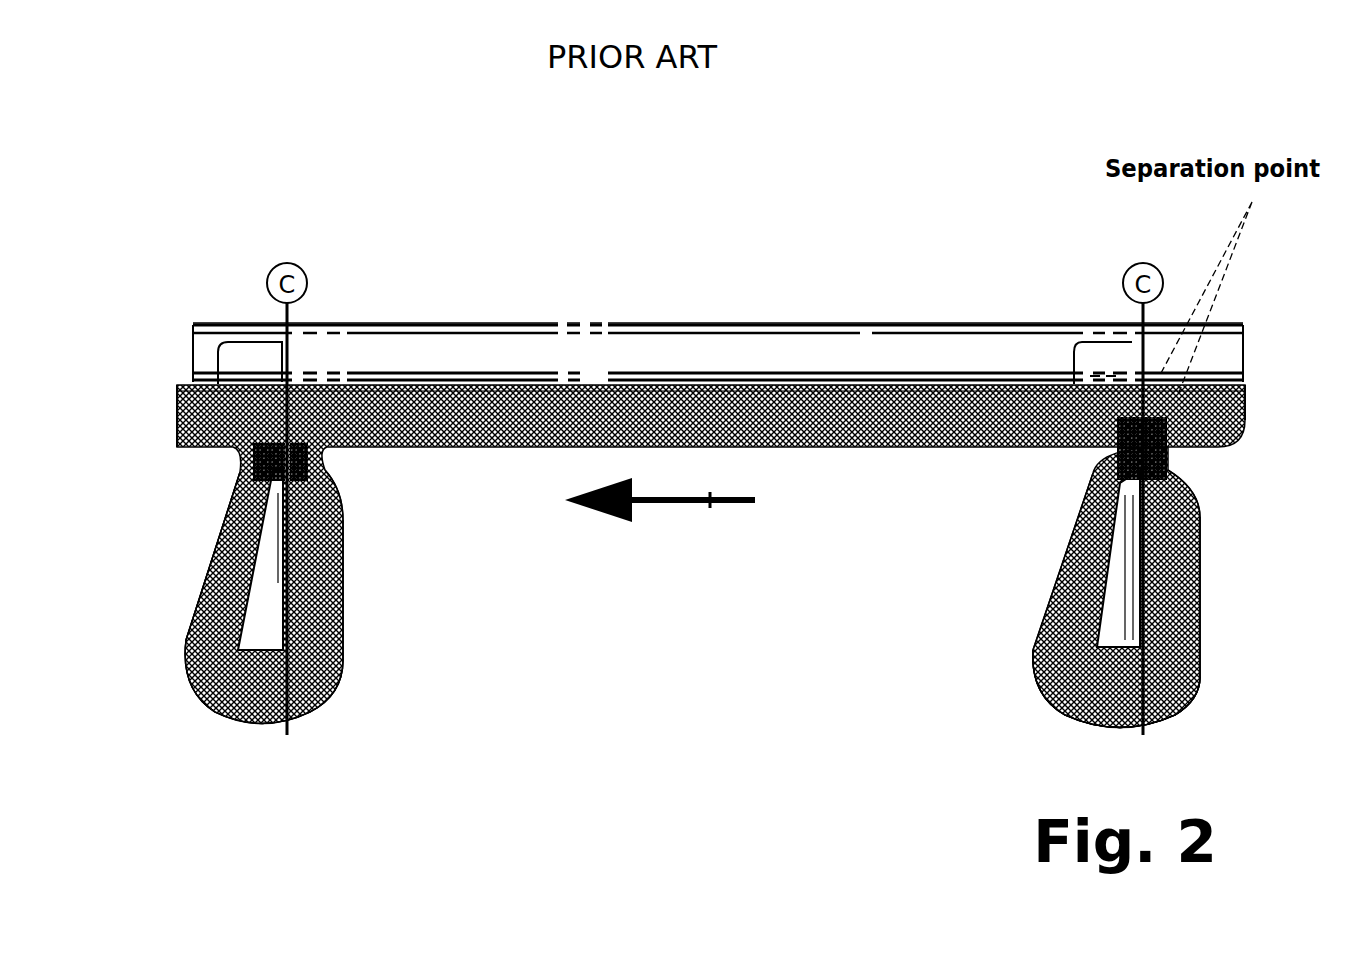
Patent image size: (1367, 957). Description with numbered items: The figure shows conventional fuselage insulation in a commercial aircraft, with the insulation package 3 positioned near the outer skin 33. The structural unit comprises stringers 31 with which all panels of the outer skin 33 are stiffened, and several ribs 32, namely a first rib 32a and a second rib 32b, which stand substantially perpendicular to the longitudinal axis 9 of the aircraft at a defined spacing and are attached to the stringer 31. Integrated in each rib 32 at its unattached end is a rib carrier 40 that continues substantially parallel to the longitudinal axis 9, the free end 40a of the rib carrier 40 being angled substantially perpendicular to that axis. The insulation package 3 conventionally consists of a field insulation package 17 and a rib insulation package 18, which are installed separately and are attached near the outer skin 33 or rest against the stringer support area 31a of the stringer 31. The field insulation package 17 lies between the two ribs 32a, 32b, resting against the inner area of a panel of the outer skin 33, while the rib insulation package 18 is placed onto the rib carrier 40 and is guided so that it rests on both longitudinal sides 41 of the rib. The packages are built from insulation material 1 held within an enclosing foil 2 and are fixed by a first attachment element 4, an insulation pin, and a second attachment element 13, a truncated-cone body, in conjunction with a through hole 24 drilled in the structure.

The insulation material 1 is at (1088, 720).
The enclosing foil 2 is at (1207, 677).
The insulation package 3 is at (573, 392).
The first attachment element 4 is at (248, 462).
The longitudinal axis of the aircraft 9 is at (705, 510).
The second attachment element 13 is at (322, 462).
The field insulation package 17 is at (835, 423).
The rib insulation package 18 is at (320, 702).
The through hole 24 is at (1118, 467).
The stringer 31 is at (492, 352).
The stringer support area 31a is at (815, 378).
The rib 32 is at (272, 368).
The first rib 32a is at (1185, 745).
The second rib 32b is at (213, 722).
The outer skin 33 is at (762, 322).
The rib carrier 40 is at (185, 676).
The end of the rib carrier 40a is at (215, 647).
The longitudinal side of the rib 41 is at (268, 645).